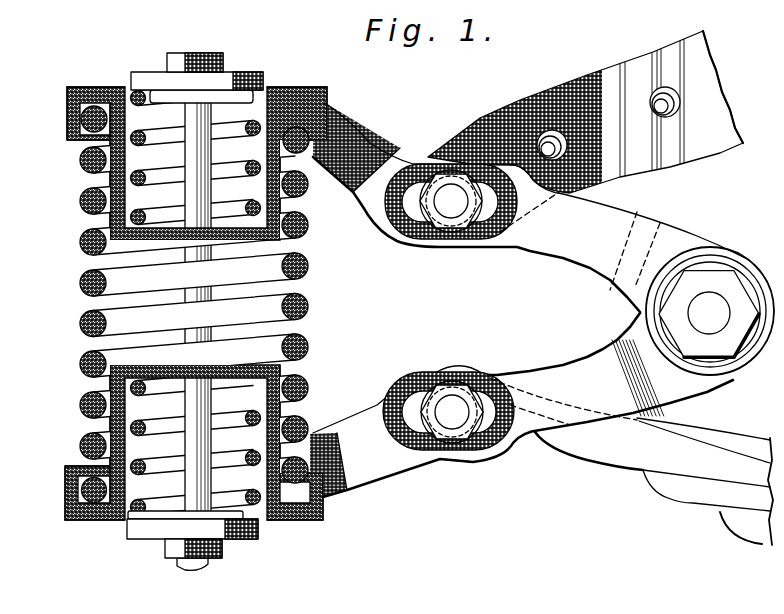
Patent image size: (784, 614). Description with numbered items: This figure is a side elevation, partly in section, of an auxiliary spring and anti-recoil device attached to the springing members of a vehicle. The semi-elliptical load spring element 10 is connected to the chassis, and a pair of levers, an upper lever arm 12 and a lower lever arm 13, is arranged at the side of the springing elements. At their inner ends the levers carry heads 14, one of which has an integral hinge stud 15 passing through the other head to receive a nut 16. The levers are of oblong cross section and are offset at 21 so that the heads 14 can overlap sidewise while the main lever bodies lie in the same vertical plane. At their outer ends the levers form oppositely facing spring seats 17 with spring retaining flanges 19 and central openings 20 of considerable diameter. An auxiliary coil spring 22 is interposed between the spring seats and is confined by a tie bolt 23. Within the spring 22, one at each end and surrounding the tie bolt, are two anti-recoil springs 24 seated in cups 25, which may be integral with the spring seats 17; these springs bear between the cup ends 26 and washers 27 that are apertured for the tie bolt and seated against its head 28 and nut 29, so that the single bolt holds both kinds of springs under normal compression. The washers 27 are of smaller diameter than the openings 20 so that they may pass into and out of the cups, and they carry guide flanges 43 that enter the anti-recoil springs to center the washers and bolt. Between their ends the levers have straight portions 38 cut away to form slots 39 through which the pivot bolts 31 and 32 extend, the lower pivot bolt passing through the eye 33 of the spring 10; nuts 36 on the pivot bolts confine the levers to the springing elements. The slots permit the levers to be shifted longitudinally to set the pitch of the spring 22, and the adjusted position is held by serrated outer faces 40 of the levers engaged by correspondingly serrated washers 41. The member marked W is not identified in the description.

The semi-elliptical load spring element 10 is at (680, 470).
The upper lever arm 12 is at (340, 137).
The lower lever arm 13 is at (350, 493).
The heads 14 is at (694, 248).
The hinge stud 15 is at (710, 297).
The nut 16 is at (727, 378).
The spring seats 17 is at (298, 93).
The spring retaining flanges 19 is at (67, 116).
The central openings 20 is at (123, 86).
The offset 21 is at (657, 220).
The coil spring 22 is at (88, 322).
The tie bolt 23 is at (192, 565).
The anti-recoil springs 24 is at (138, 180).
The cups 25 is at (115, 218).
The cup ends 26 is at (147, 242).
The washers 27 is at (240, 78).
The head of tie bolt 28 is at (175, 53).
The nut of tie bolt 29 is at (220, 553).
The pivot bolt 31 is at (453, 207).
The pivot bolt 32 is at (457, 425).
The eye of the spring 33 is at (450, 366).
The nuts 36 is at (463, 222).
The straight portions 38 is at (440, 162).
The slots 39 is at (492, 208).
The roughened or serrated faces 40 is at (397, 239).
The washers 41 is at (420, 190).
The guide flanges 43 is at (228, 103).
The work piece W is at (637, 157).